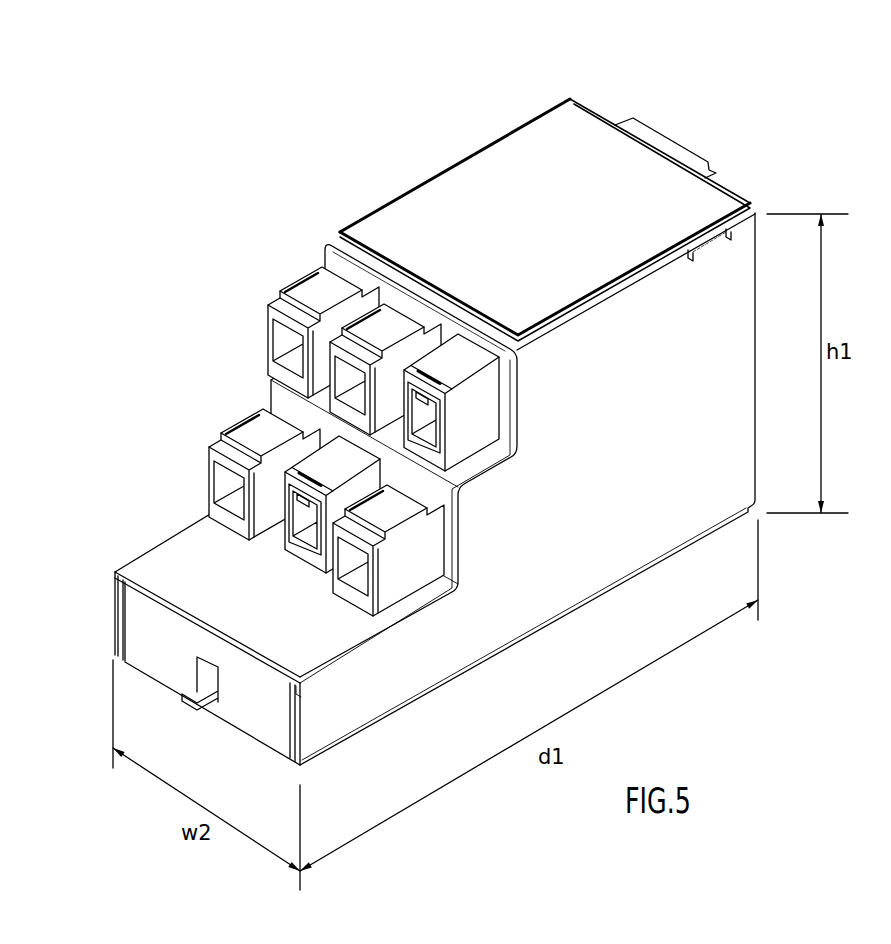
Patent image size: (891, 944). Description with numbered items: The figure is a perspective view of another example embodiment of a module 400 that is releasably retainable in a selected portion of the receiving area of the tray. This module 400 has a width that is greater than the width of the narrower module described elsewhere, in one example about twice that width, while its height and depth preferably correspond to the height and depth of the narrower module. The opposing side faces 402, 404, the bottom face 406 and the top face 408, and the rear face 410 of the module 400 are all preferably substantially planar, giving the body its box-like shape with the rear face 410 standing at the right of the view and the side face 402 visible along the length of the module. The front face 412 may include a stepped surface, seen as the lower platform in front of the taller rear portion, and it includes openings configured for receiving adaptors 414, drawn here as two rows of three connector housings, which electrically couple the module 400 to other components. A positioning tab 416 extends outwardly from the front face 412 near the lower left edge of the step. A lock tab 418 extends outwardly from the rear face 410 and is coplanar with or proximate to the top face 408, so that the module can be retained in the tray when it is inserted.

The module 400 is at (770, 95).
The side face 402 is at (460, 489).
The side face 404 is at (535, 209).
The bottom face 406 is at (560, 632).
The top face 408 is at (470, 185).
The rear face 410 is at (766, 336).
The front face 412 is at (176, 622).
The adaptors 414 is at (247, 440).
The positioning tab 416 is at (196, 697).
The lock tab 418 is at (652, 138).